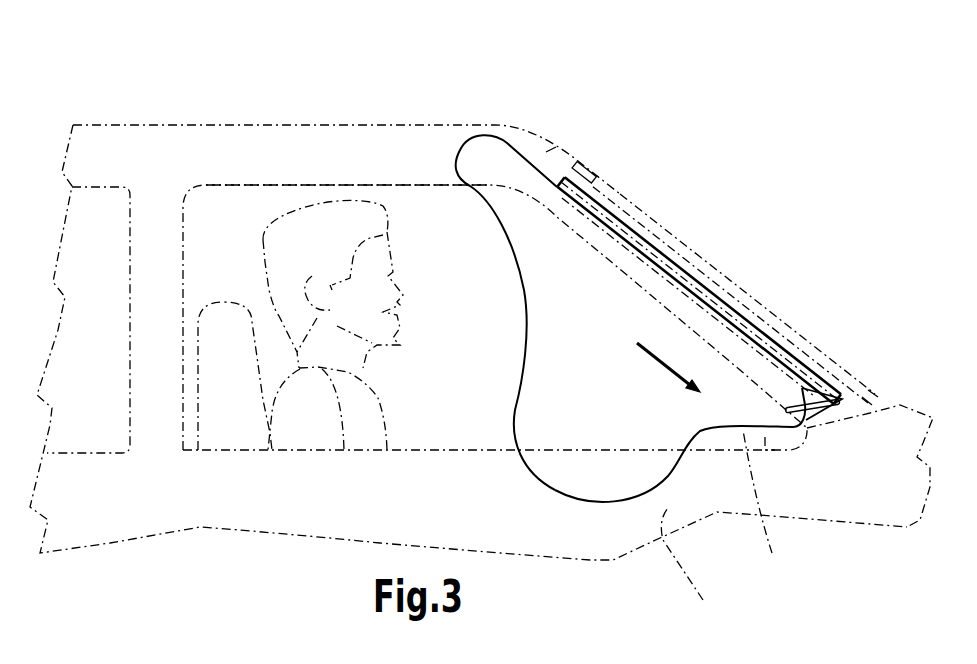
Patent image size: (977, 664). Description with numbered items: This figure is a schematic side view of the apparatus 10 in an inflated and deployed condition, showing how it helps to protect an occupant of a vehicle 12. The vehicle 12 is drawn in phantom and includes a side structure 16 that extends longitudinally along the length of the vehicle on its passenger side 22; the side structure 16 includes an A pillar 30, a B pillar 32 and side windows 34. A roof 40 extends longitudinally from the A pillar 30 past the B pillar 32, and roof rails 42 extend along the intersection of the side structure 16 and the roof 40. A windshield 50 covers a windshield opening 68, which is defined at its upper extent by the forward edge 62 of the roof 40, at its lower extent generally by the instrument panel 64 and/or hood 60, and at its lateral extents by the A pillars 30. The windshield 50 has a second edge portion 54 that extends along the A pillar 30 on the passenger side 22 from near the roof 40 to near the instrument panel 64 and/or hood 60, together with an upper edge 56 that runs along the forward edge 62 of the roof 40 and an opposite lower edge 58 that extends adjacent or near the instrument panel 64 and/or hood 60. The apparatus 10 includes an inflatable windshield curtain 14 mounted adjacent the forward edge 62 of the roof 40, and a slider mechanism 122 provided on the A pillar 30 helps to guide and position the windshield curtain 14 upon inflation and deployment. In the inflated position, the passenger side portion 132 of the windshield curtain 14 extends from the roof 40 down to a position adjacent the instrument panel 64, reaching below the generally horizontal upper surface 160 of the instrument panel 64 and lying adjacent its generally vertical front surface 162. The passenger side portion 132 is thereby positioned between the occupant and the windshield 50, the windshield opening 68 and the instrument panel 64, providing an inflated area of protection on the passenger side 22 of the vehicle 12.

The apparatus 10 is at (662, 124).
The vehicle 12 is at (585, 82).
The inflatable windshield curtain 14 is at (505, 228).
The side structure 16 is at (233, 500).
The passenger side 22 is at (419, 426).
The A pillar 30 is at (663, 287).
The B pillar 32 is at (150, 350).
The side windows 34 is at (197, 240).
The roof 40 is at (163, 143).
The roof rails 42 is at (321, 156).
The windshield 50 is at (727, 293).
The second edge portion 54 is at (660, 232).
The upper edge 56 is at (585, 165).
The lower edge 58 is at (866, 392).
The hood 60 is at (903, 443).
The forward edge 62 is at (551, 150).
The instrument panel 64 is at (772, 438).
The windshield opening 68 is at (650, 195).
The slider mechanism 122 is at (693, 285).
The passenger side portion 132 is at (594, 498).
The upper surface 160 is at (771, 508).
The front surface 162 is at (693, 570).